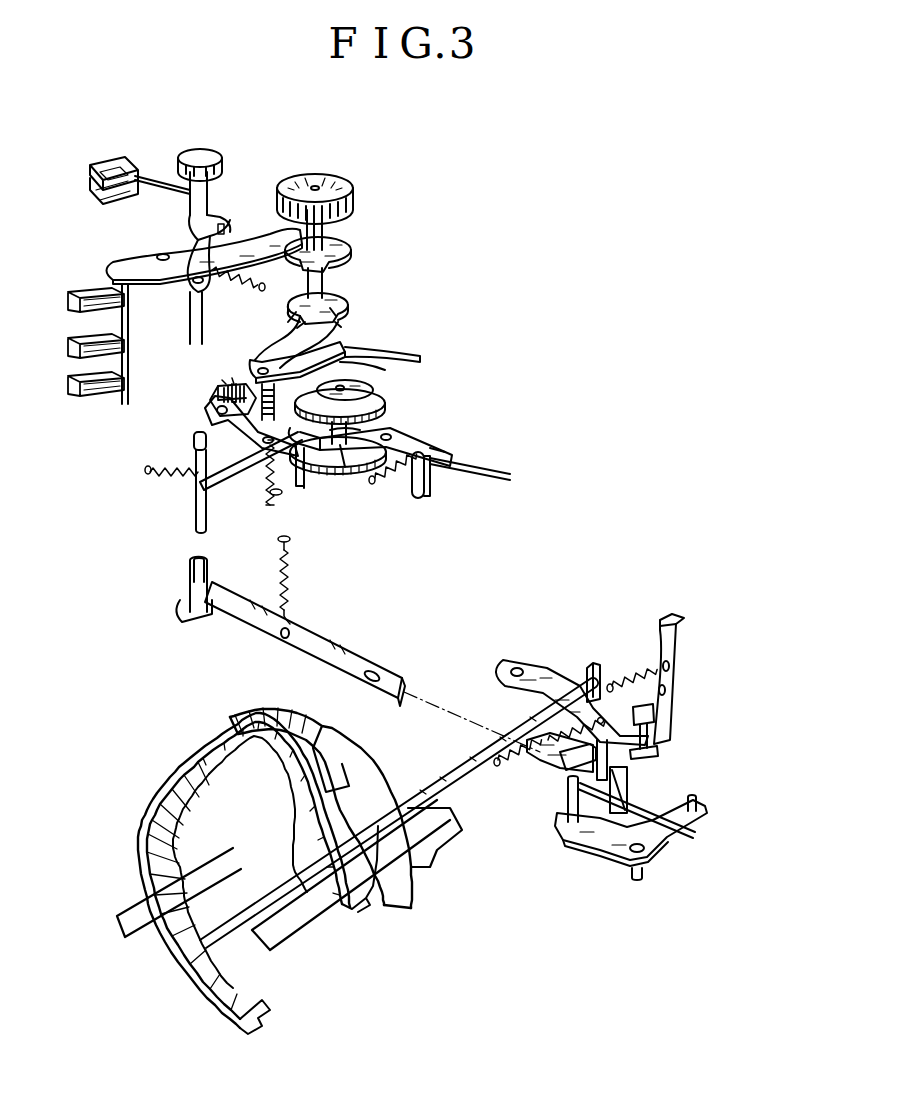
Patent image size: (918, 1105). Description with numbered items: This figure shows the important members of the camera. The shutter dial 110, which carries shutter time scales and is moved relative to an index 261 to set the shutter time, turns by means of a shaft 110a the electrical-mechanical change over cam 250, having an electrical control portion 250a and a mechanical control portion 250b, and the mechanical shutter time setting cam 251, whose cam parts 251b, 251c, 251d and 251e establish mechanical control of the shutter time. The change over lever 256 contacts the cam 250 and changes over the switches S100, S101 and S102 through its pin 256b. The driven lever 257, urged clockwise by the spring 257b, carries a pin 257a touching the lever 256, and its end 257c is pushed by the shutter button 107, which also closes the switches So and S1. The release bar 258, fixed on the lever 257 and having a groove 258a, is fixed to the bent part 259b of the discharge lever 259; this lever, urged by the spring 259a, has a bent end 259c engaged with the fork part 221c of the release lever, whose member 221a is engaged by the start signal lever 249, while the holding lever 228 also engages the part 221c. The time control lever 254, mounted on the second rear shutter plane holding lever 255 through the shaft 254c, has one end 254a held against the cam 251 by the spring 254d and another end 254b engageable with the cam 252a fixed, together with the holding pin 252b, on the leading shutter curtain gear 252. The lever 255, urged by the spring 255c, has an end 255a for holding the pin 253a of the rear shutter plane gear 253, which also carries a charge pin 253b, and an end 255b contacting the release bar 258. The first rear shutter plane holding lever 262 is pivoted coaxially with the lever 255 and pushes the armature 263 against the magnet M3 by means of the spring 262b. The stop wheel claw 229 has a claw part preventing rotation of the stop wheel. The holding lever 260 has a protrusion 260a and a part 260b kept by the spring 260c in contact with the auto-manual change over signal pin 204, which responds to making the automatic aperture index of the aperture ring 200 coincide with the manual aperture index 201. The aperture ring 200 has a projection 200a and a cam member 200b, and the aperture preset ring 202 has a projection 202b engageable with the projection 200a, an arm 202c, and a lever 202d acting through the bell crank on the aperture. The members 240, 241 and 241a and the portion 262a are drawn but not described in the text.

The shutter button 107 is at (200, 150).
The shutter dial 110 is at (336, 178).
The shaft 110a is at (326, 236).
The index 261 is at (380, 190).
The electrical-mechanical change over cam 250 is at (356, 248).
The electrical control portion 250a is at (345, 263).
The mechanical control portion 250b is at (245, 270).
The mechanical shutter time setting cam 251 is at (346, 300).
The cam part 251b is at (308, 312).
The cam part 251c is at (322, 340).
The cam part 251d is at (341, 322).
The cam part 251e is at (346, 310).
The time control lever 254 is at (262, 368).
The end of time control lever 254a is at (410, 356).
The end of time control lever 254b is at (380, 368).
The shaft 254c is at (264, 362).
The spring 254d is at (265, 450).
The second rear shutter plane holding lever 255 is at (230, 488).
The end of second rear shutter plane holding lever 255a is at (373, 396).
The end of second rear shutter plane holding lever 255b is at (215, 478).
The spring 255c is at (180, 475).
The leading shutter curtain gear 252 is at (420, 433).
The cam 252a is at (372, 412).
The front shutter plane holding pin 252b is at (430, 445).
The rear shutter plane gear 253 is at (318, 472).
The rear shutter plane holding pin 253a is at (290, 543).
The charge pin 253b is at (350, 478).
The rod 241 is at (507, 474).
The spring 241a is at (395, 470).
The hook member 240 is at (428, 480).
The first rear shutter plane holding lever 262 is at (210, 418).
The lever arm 262a is at (302, 462).
The spring 262b is at (278, 496).
The armature 263 is at (210, 400).
The magnet M3 is at (222, 384).
The release bar 258 is at (200, 522).
The groove 258a is at (194, 442).
The driven lever 257 is at (190, 290).
The pin 257a is at (210, 215).
The spring 257b is at (193, 270).
The end of driven lever 257c is at (193, 218).
The switch So is at (96, 165).
The switch S1 is at (96, 191).
The electrical-mechanical change over lever 256 is at (130, 262).
The pin 256b is at (128, 375).
The switch S100 is at (68, 302).
The switch S101 is at (68, 350).
The switch S102 is at (68, 386).
The discharge lever 259 is at (340, 672).
The spring 259a is at (290, 592).
The bent part 259b is at (186, 618).
The bent end 259c is at (662, 824).
The holding lever 260 is at (532, 668).
The protrusion 260a is at (650, 752).
The part of holding lever 260b is at (592, 662).
The spring 260c is at (512, 772).
The stop wheel claw 229 is at (670, 705).
The holding lever 228 is at (612, 755).
The member of release lever 221a is at (566, 806).
The fork part of release lever 221c is at (715, 791).
The start signal lever 249 is at (650, 862).
The aperture ring 200 is at (176, 950).
The projection 200a is at (372, 902).
The cam member 200b is at (266, 1008).
The index 201 is at (263, 790).
The aperture preset ring 202 is at (372, 782).
The projection 202b is at (336, 762).
The arm 202c is at (446, 838).
The lever 202d is at (128, 912).
The auto-manual change over signal pin 204 is at (300, 892).